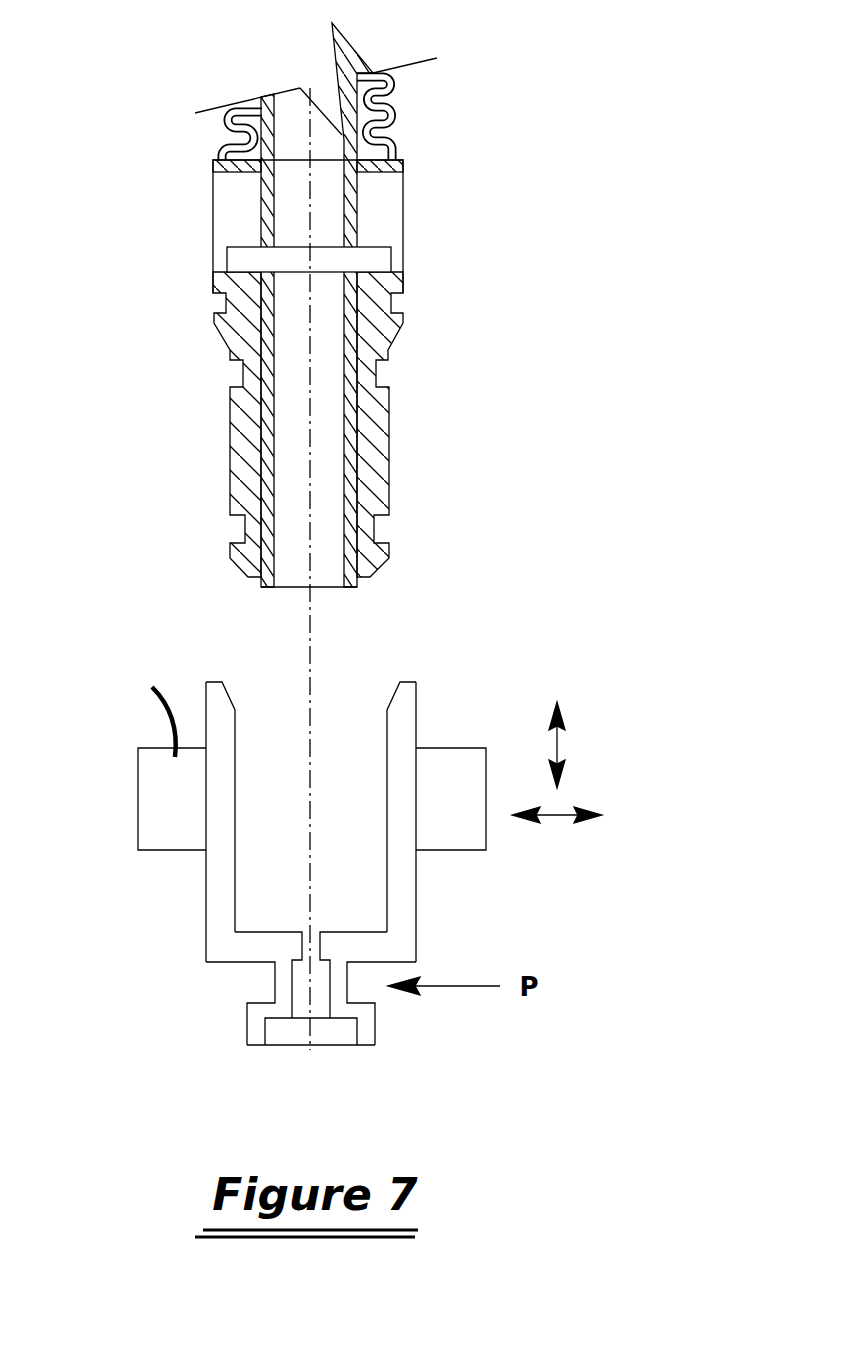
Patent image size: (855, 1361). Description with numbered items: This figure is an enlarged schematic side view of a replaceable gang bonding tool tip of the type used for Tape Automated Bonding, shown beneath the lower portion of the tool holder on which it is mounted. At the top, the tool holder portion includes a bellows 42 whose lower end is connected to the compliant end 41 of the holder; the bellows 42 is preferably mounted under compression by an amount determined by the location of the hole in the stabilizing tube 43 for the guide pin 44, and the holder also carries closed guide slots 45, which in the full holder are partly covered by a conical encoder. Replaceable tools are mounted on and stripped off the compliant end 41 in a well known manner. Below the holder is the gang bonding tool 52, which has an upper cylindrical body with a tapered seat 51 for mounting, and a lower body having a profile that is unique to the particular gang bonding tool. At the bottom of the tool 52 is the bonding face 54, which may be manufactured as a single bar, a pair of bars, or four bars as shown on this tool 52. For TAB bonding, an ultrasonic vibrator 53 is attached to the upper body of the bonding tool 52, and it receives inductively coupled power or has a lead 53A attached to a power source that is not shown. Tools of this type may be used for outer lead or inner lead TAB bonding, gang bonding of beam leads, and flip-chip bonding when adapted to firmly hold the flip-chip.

The compliant end 41 is at (386, 473).
The bellows 42 is at (395, 97).
The stabilizing tube 43 is at (268, 222).
The guide pin 44 is at (373, 258).
The closed guide slots 45 is at (393, 213).
The tapered seat 51 is at (397, 692).
The gang bonding tool 52 is at (440, 925).
The ultrasonic vibrator 53 is at (487, 850).
The lead 53A is at (163, 712).
The bonding face 54 is at (369, 1045).